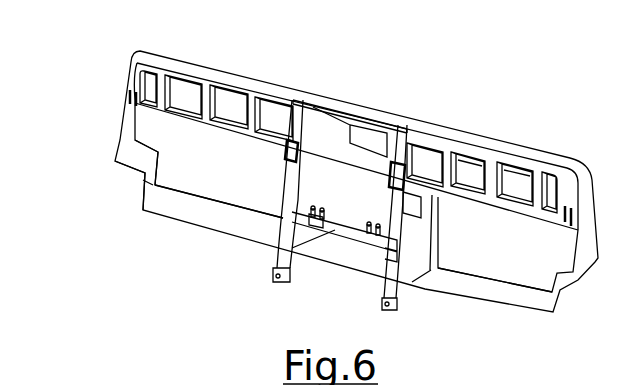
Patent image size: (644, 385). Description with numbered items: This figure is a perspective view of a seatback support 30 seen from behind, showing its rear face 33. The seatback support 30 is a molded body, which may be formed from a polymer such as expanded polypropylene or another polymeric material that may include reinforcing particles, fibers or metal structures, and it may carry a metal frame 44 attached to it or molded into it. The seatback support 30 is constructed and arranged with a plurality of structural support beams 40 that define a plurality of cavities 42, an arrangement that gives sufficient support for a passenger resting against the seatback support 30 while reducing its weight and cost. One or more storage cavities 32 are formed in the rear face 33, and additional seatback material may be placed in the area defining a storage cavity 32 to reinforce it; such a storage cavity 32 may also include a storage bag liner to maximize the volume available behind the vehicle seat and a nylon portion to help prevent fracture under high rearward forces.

The seatback support 30 is at (143, 50).
The storage cavity 32 is at (233, 202).
The rear face 33 is at (143, 155).
The structural support beam 40 is at (447, 170).
The cavity 42 is at (472, 172).
The metal frame 44 is at (343, 220).